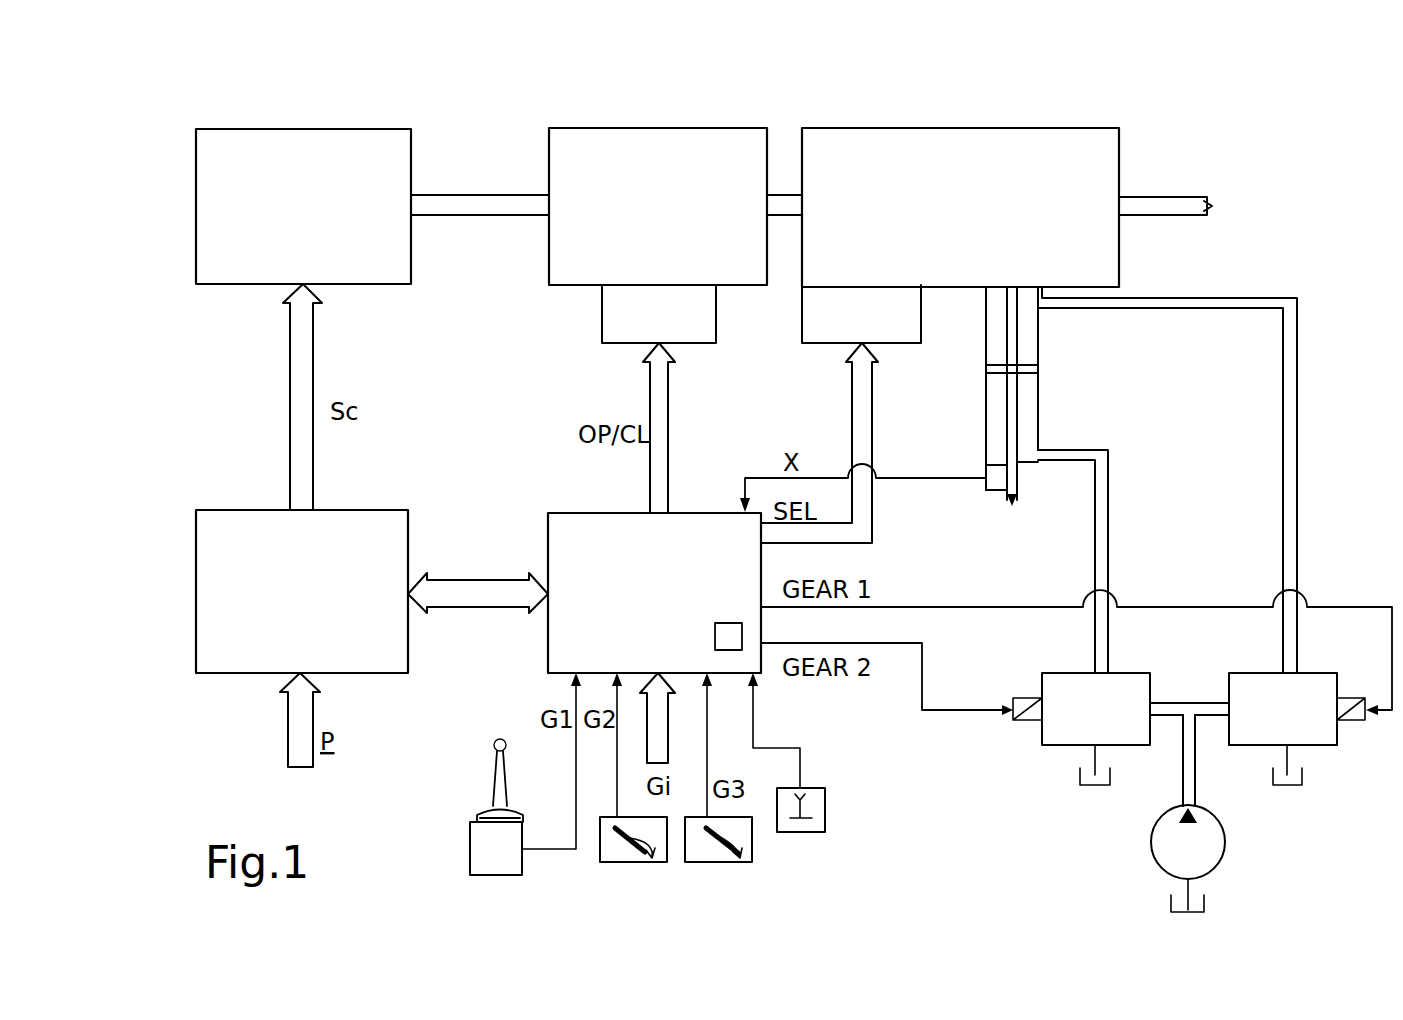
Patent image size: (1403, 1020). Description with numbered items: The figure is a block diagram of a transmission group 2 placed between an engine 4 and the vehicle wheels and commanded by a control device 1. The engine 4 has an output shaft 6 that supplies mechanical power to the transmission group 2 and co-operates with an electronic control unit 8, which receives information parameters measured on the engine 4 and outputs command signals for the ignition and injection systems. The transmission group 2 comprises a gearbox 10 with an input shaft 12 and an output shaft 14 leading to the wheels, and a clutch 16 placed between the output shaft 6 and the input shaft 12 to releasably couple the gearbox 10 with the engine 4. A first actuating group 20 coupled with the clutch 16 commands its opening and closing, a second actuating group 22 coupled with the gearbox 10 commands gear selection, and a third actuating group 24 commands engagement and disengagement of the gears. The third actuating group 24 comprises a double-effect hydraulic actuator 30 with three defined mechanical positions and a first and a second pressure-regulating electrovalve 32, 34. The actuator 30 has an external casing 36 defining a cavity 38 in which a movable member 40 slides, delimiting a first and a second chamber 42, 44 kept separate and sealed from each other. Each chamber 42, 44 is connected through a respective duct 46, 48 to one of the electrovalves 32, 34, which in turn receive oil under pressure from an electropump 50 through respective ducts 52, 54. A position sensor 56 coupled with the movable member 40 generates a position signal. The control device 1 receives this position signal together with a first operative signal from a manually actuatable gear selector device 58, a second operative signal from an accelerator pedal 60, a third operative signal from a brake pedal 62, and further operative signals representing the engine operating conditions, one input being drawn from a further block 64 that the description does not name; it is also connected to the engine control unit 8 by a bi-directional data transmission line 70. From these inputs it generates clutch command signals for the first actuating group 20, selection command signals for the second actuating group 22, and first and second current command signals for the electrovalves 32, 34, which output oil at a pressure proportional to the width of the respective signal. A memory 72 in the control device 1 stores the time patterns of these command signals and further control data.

The control device 1 is at (543, 506).
The transmission group 2 is at (836, 118).
The engine 4 is at (205, 152).
The output shaft 6 is at (478, 200).
The electronic control unit 8 is at (218, 510).
The gearbox 10 is at (1082, 147).
The input shaft 12 is at (777, 205).
The output shaft 14 is at (1185, 210).
The clutch 16 is at (644, 145).
The first actuating group 20 is at (608, 345).
The second actuating group 22 is at (802, 320).
The third actuating group 24 is at (1285, 288).
The double-effect hydraulic actuator 30 is at (1043, 366).
The first pressure-regulating electrovalve 32 is at (1135, 690).
The second pressure-regulating electrovalve 34 is at (1260, 685).
The external casing 36 is at (1040, 463).
The cavity 38 is at (991, 430).
The movable member 40 is at (991, 365).
The first chamber 42 is at (1027, 296).
The second chamber 44 is at (1030, 433).
The duct 46 is at (1231, 305).
The duct 48 is at (1100, 505).
The electropump 50 is at (1213, 843).
The duct 52 is at (1170, 700).
The duct 54 is at (1210, 700).
The position sensor 56 is at (992, 485).
The gear selector device 58 is at (490, 866).
The accelerator pedal 60 is at (630, 862).
The brake pedal 62 is at (735, 859).
The speed sensor 64 is at (818, 795).
The bi-directional data transmission line 70 is at (476, 598).
The memory 72 is at (727, 645).